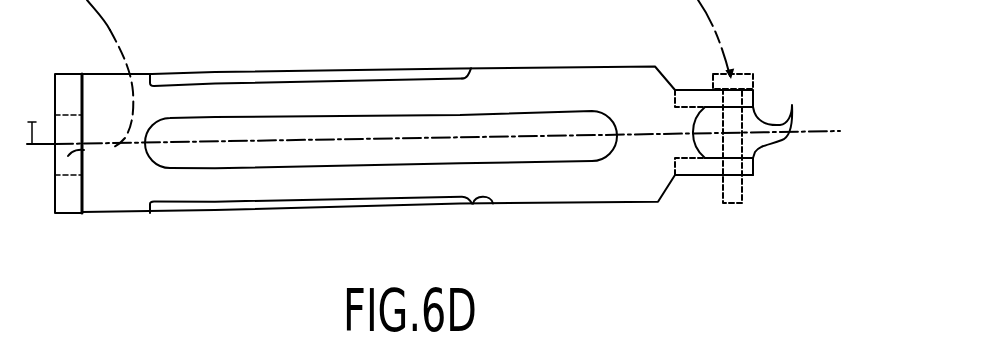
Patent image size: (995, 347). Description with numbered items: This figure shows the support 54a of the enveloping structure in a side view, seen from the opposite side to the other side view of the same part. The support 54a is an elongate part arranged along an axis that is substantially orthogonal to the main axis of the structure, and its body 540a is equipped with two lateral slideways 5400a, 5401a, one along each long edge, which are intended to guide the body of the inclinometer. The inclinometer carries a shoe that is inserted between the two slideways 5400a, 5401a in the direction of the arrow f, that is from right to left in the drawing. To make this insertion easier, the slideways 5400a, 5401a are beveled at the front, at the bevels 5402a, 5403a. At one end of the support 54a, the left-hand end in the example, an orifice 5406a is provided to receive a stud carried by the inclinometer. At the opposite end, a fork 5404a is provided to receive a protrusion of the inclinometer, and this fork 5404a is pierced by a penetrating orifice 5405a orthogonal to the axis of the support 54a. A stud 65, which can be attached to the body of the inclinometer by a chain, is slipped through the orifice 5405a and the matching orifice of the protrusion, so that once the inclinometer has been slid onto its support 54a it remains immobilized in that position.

The support 54a is at (324, 58).
The body 540a is at (545, 90).
The lateral slideway 5400a is at (212, 77).
The lateral slideway 5401a is at (197, 213).
The bevel 5402a is at (463, 69).
The bevel 5403a is at (491, 204).
The fork 5404a is at (792, 106).
The penetrating orifice 5405a is at (753, 175).
The orifice 5406a is at (84, 151).
The stud 65 is at (727, 183).